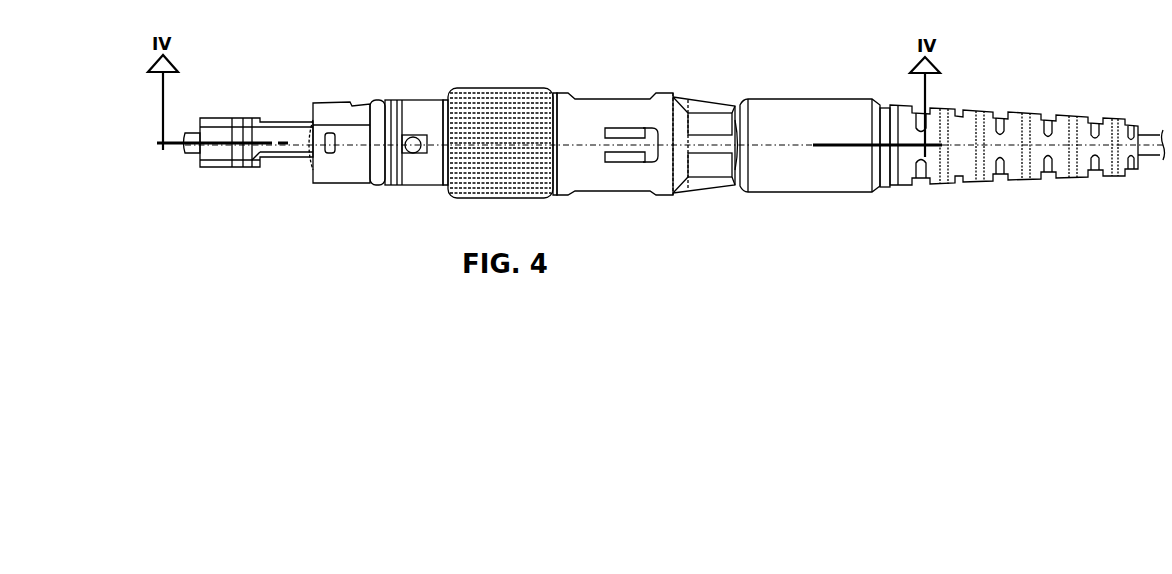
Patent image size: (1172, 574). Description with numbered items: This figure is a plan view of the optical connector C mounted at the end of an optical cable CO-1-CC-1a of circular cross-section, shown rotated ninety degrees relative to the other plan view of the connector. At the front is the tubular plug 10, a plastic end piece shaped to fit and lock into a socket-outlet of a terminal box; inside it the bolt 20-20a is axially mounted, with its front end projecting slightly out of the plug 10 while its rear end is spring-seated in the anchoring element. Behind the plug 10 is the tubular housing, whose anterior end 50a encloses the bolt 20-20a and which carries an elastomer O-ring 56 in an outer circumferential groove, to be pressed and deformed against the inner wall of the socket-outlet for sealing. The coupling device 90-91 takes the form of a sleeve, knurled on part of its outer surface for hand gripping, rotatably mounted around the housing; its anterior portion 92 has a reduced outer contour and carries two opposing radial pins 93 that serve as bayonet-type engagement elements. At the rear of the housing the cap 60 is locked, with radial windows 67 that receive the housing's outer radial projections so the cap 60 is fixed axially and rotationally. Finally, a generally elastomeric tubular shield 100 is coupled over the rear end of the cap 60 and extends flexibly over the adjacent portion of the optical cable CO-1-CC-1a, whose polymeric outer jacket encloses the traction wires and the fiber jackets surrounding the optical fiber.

The tubular plug 10 is at (256, 113).
The bolt and its front end 20-20a is at (187, 156).
The anterior end of tubular housing 50a is at (322, 96).
The elastomer O-ring 56 is at (377, 93).
The cap 60 is at (606, 93).
The radial windows 67 is at (647, 150).
The coupling device in the form of a sleeve 90-91 is at (475, 82).
The anterior portion of sleeve 92 is at (428, 196).
The radial pins 93 is at (421, 133).
The connector C is at (733, 83).
The tubular shield 100 is at (1001, 98).
The optical cable with cable jacket and outer jacket CO-1-CC-1a is at (1156, 160).